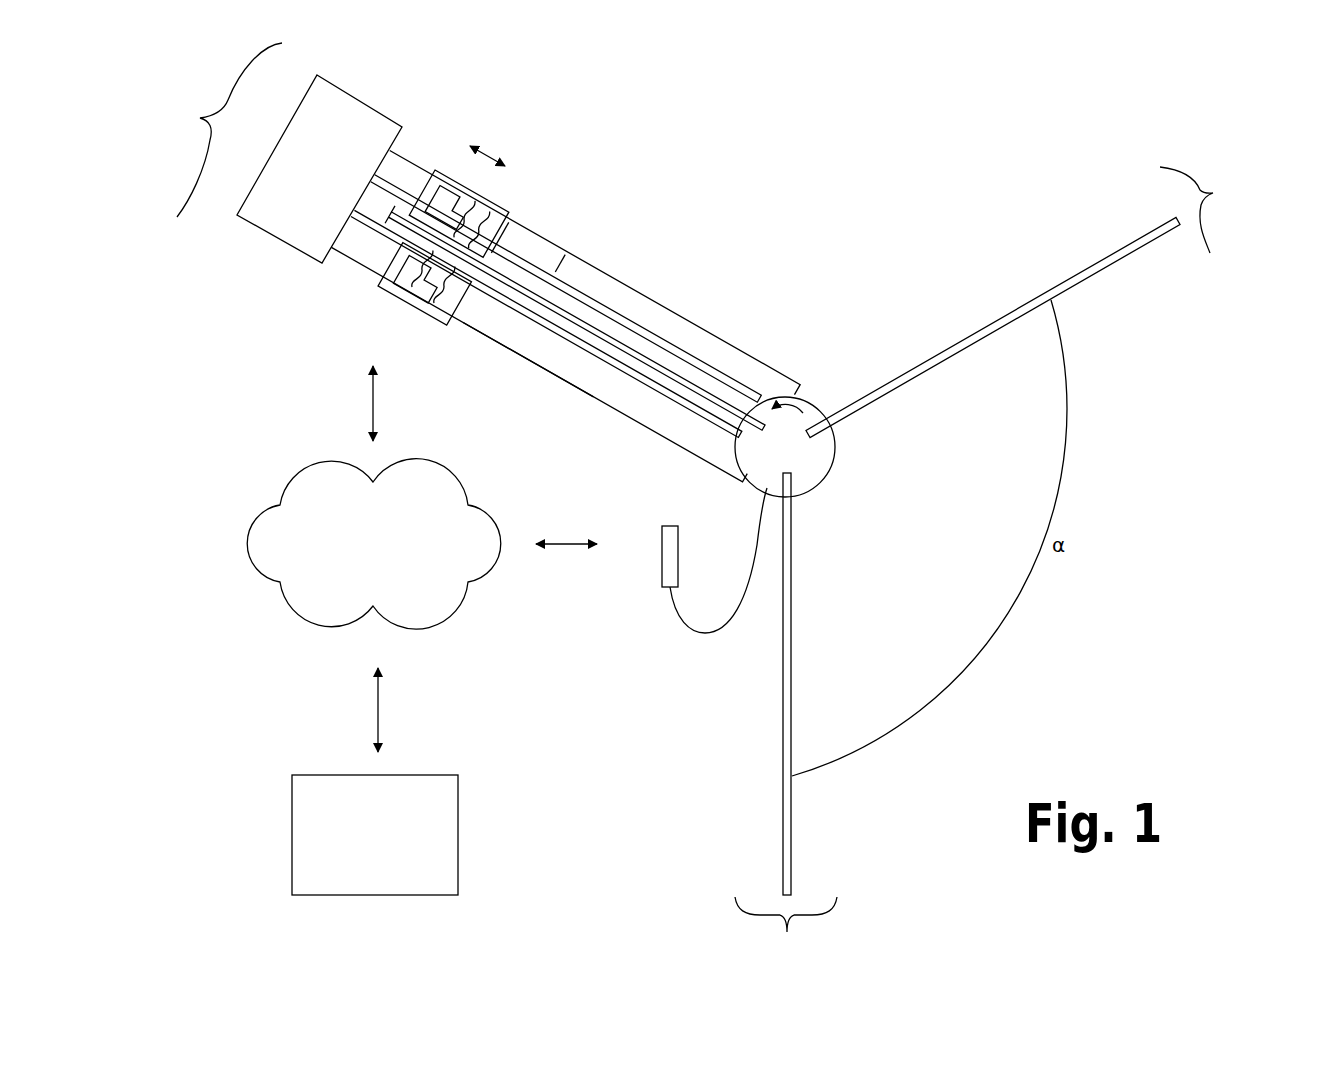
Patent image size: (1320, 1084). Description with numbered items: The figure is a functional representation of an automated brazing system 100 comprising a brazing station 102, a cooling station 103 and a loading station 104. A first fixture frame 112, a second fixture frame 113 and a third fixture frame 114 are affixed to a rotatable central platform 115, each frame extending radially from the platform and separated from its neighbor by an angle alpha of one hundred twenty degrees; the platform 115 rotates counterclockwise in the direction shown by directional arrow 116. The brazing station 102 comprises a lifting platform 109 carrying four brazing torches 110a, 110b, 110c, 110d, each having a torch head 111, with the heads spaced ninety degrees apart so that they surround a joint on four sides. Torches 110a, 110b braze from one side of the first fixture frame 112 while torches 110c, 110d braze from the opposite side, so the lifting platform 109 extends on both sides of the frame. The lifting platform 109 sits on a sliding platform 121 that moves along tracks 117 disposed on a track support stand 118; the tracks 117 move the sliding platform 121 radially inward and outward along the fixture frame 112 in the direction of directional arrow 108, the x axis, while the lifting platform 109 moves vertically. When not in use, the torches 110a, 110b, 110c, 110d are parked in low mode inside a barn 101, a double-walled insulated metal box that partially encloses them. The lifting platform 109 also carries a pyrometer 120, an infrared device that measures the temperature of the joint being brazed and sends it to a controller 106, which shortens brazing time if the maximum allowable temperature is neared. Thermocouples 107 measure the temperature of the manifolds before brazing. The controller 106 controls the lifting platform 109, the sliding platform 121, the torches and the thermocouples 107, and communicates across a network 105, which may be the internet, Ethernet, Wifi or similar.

The automated brazing system 100 is at (960, 110).
The barn 101 is at (340, 178).
The brazing station 102 is at (216, 130).
The cooling station 103 is at (786, 930).
The loading station 104 is at (1206, 210).
The network 105 is at (392, 568).
The controller 106 is at (394, 858).
The thermocouples 107 is at (672, 535).
The directional arrow 108 is at (492, 150).
The lifting platform 109 is at (393, 287).
The brazing torch 110a is at (455, 283).
The brazing torch 110b is at (372, 263).
The brazing torch 110c is at (457, 205).
The brazing torch 110d is at (482, 203).
The torch head 111 is at (497, 253).
The first fixture frame 112 is at (693, 378).
The second fixture frame 113 is at (792, 705).
The third fixture frame 114 is at (1065, 283).
The rotatable central platform 115 is at (820, 470).
The directional arrow 116 is at (800, 395).
The tracks 117 is at (572, 295).
The track support stand 118 is at (527, 358).
The pyrometer 120 is at (427, 293).
The sliding platform 121 is at (495, 213).